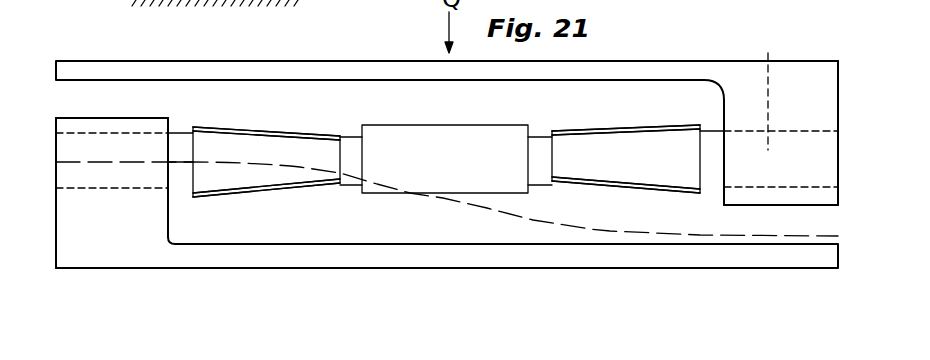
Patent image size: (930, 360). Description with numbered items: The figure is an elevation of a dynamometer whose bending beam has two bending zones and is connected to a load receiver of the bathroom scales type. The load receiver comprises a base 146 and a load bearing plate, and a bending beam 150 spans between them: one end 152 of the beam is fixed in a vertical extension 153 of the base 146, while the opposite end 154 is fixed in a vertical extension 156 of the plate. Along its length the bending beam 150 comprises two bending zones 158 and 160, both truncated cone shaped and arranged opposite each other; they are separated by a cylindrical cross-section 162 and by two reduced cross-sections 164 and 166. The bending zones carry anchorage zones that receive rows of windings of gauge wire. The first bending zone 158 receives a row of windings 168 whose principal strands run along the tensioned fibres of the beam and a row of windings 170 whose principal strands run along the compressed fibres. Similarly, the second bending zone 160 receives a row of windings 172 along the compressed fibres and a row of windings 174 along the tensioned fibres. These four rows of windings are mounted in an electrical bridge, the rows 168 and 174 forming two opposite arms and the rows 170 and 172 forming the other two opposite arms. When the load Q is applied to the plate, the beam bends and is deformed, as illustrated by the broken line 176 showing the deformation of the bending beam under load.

The base 146 is at (457, 257).
The bending beam 150 is at (397, 199).
The end of the bending beam 152 is at (106, 152).
The vertical extension of the base 153 is at (111, 250).
The opposite end of the bending beam 154 is at (754, 86).
The vertical extension of the plate 156 is at (805, 80).
The bending zone 158 is at (258, 192).
The bending zone 160 is at (637, 193).
The cylindrical cross-section 162 is at (444, 147).
The reduced cross-section 164 is at (349, 147).
The reduced cross-section 166 is at (540, 147).
The row of windings 168 is at (249, 132).
The row of windings 170 is at (233, 182).
The row of windings 172 is at (625, 132).
The row of windings 174 is at (663, 186).
The broken line 176 is at (537, 218).